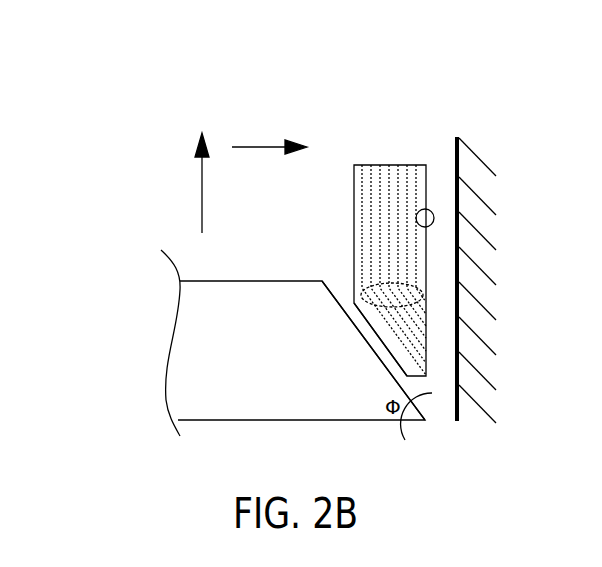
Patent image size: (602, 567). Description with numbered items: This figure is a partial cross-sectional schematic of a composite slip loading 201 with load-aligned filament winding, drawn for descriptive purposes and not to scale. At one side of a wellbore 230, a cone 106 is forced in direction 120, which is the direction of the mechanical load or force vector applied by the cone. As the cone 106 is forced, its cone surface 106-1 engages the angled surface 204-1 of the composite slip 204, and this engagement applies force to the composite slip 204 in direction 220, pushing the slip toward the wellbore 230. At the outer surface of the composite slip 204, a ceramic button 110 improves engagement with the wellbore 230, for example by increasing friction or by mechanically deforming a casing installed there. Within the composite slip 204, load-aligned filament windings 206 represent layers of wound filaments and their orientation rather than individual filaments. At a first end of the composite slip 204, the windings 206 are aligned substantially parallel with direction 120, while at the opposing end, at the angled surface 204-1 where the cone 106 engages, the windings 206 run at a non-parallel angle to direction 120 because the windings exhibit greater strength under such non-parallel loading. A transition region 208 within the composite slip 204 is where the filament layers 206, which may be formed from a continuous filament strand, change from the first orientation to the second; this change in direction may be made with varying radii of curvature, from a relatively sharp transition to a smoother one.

The composite slip loading 201 is at (112, 56).
The direction 120 is at (202, 186).
The direction 220 is at (252, 149).
The composite slip 204 is at (376, 253).
The load-aligned filament windings 206 is at (354, 193).
The ceramic button 110 is at (428, 209).
The transition region 208 is at (360, 289).
The cone 106 is at (275, 360).
The cone surface 106-1 is at (343, 310).
The angled surface 204-1 is at (381, 343).
The wellbore 230 is at (456, 421).